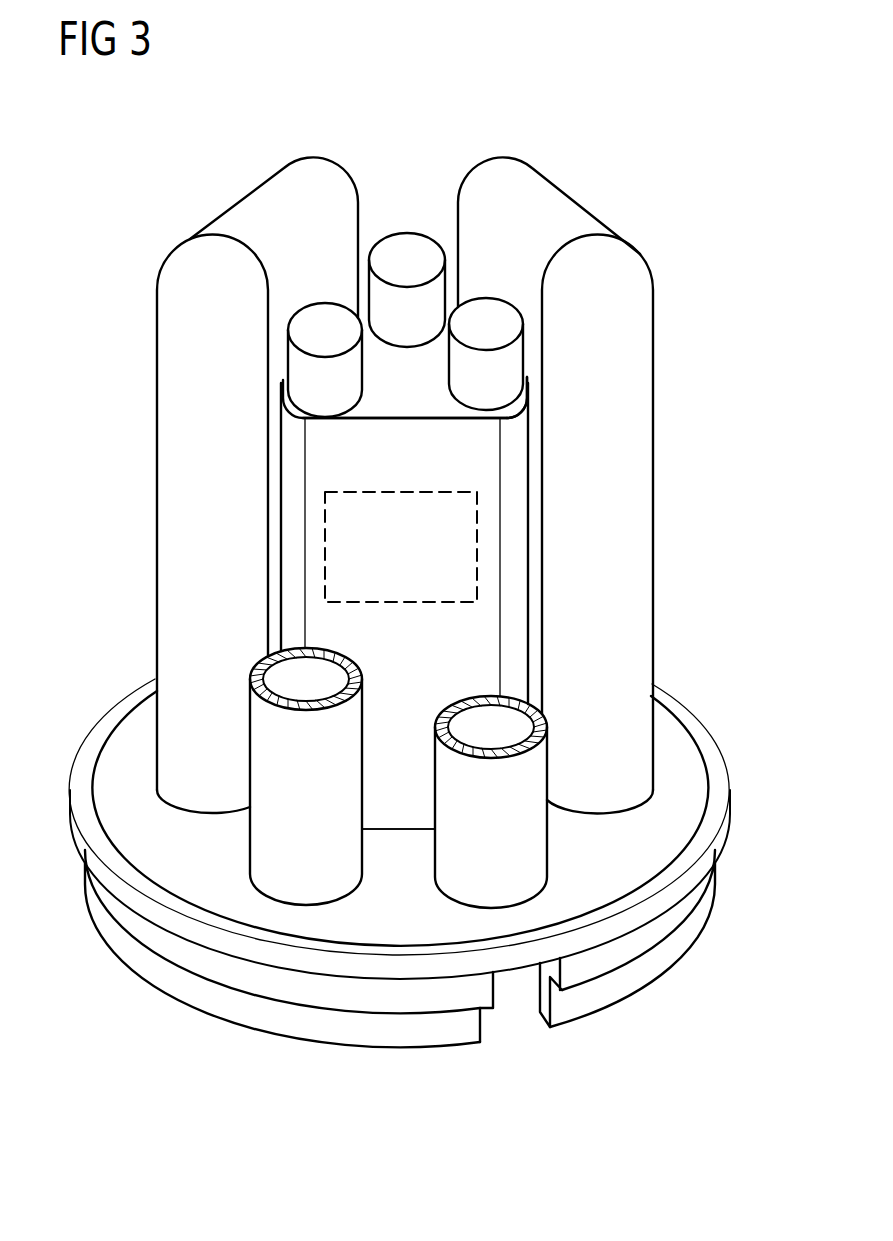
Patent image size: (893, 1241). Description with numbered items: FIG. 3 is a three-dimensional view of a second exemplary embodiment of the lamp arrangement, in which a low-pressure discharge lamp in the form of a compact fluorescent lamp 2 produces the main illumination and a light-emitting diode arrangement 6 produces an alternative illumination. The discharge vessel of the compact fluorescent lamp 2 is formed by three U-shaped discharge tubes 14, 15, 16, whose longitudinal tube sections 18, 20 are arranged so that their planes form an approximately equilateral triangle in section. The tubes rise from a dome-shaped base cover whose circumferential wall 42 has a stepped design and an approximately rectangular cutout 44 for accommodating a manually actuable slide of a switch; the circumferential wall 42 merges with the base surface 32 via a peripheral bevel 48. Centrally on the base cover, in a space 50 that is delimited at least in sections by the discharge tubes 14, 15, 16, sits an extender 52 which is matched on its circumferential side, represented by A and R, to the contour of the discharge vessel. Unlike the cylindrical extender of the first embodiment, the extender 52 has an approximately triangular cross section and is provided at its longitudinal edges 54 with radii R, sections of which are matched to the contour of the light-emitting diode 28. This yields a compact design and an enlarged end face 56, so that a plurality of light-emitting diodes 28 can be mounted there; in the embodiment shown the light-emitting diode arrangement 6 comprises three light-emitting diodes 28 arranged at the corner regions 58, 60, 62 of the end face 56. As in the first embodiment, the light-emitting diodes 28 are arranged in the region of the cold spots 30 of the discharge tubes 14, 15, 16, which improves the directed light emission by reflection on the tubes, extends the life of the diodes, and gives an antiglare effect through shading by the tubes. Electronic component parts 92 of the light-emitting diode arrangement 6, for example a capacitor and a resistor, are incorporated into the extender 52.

The compact fluorescent lamp 2 is at (110, 167).
The light-emitting diode arrangement 6 is at (538, 298).
The U-shaped discharge tube 14 is at (140, 528).
The U-shaped discharge tube 15 is at (670, 530).
The U-shaped discharge tube 16 is at (232, 827).
The longitudinal tube section 18 is at (258, 855).
The longitudinal tube section 20 is at (523, 840).
The light-emitting diode 28 is at (404, 242).
The cold spots 30 is at (606, 186).
The base surface 32 is at (683, 758).
The circumferential wall 42 is at (253, 980).
The cutout 44 is at (543, 1005).
The peripheral bevel 48 is at (100, 737).
The space 50 is at (510, 275).
The extender 52 is at (437, 443).
The longitudinal edges 54 is at (411, 312).
The end face 56 is at (385, 407).
The corner region 58 is at (268, 402).
The corner region 60 is at (352, 303).
The corner region 62 is at (528, 385).
The electronic component parts 92 is at (412, 590).
The circumferential side A is at (272, 364).
The radii R is at (280, 598).